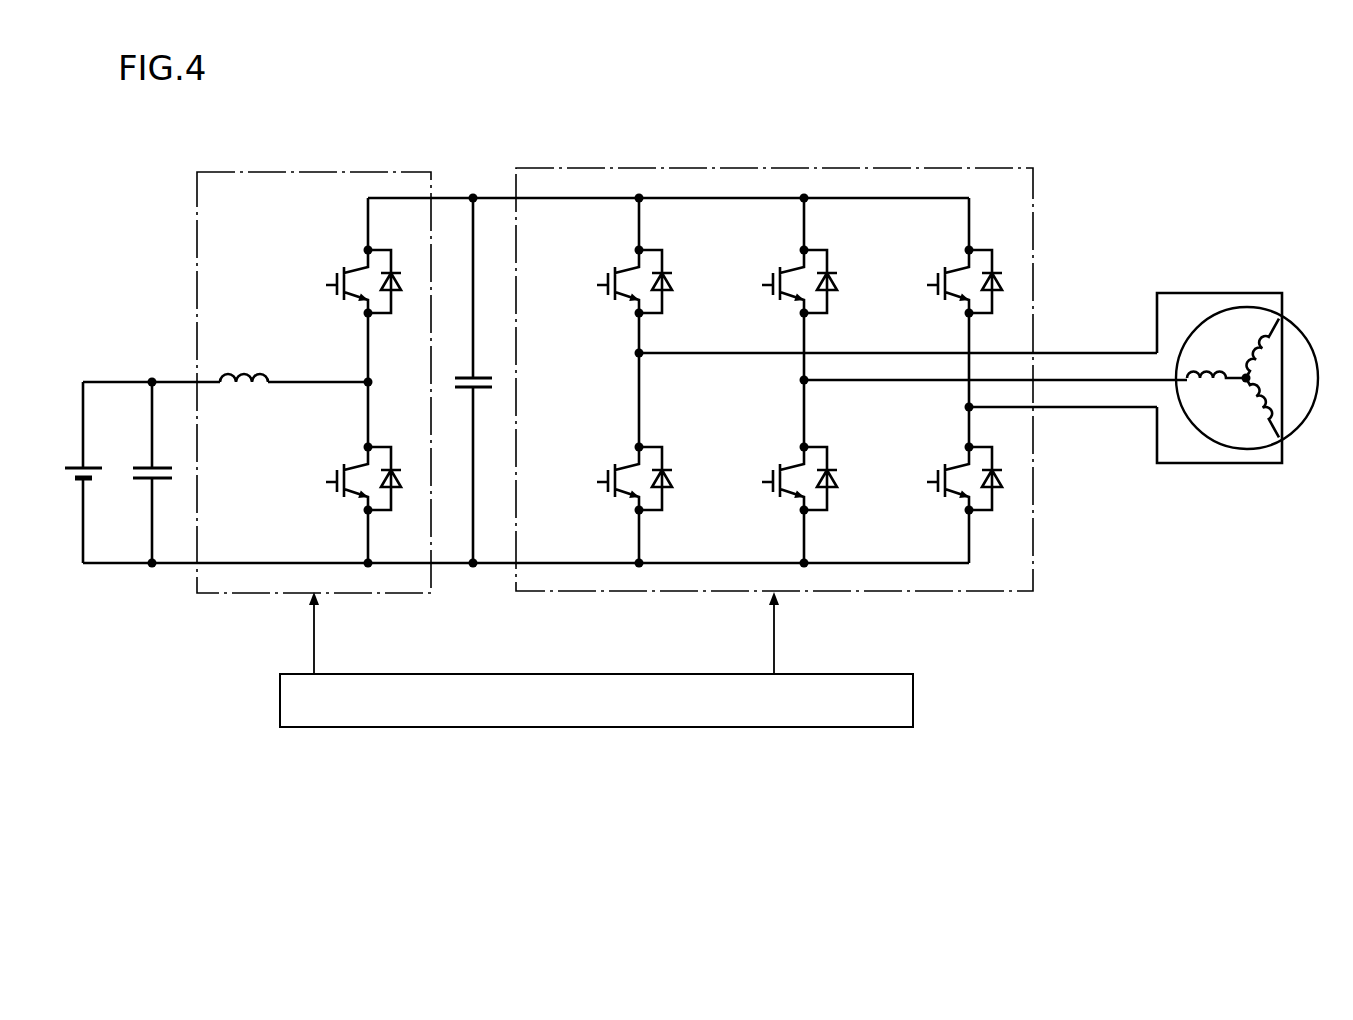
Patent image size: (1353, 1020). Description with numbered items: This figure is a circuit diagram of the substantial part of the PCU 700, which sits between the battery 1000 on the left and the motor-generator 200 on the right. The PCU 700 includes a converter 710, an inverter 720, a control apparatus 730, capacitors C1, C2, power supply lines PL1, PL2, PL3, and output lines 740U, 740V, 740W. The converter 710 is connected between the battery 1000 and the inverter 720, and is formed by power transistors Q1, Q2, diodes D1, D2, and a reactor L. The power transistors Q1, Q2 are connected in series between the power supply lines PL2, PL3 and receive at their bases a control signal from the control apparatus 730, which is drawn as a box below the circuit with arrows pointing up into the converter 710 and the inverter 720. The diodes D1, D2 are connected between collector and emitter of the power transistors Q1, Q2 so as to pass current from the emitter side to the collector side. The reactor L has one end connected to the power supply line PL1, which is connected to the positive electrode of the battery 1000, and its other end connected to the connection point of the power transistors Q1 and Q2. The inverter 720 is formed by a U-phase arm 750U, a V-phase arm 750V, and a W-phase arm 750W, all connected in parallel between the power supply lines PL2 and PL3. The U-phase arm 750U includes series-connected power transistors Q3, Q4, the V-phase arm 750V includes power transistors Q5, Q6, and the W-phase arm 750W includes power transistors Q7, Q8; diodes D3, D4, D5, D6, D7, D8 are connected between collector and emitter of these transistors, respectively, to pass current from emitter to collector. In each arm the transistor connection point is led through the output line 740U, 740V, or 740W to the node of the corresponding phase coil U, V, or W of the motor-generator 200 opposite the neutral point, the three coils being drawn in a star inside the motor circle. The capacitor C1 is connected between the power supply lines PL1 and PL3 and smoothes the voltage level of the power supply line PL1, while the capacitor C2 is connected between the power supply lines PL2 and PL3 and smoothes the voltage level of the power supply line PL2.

The PCU 700 is at (1090, 790).
The converter 710 is at (317, 172).
The inverter 720 is at (980, 167).
The control apparatus 730 is at (880, 728).
The battery 1000 is at (75, 467).
The motor-generator 200 is at (1255, 378).
The power supply line PL1 is at (137, 380).
The power supply line PL2 is at (451, 196).
The power supply line PL3 is at (452, 572).
The reactor L is at (236, 378).
The capacitor C1 is at (165, 467).
The capacitor C2 is at (483, 375).
The power transistor Q1 is at (347, 273).
The power transistor Q2 is at (347, 470).
The power transistor Q3 is at (618, 273).
The power transistor Q4 is at (618, 470).
The power transistor Q5 is at (783, 273).
The power transistor Q6 is at (783, 470).
The power transistor Q7 is at (948, 273).
The power transistor Q8 is at (948, 470).
The diode D1 is at (397, 270).
The diode D2 is at (397, 467).
The diode D3 is at (668, 270).
The diode D4 is at (668, 467).
The diode D5 is at (833, 270).
The diode D6 is at (833, 467).
The diode D7 is at (998, 270).
The diode D8 is at (998, 488).
The output line 740U is at (676, 356).
The output line 740V is at (857, 383).
The output line 740W is at (1005, 410).
The U-phase arm 750U is at (632, 359).
The V-phase arm 750V is at (796, 386).
The W-phase arm 750W is at (962, 413).
The U-phase coil U is at (1268, 346).
The V-phase coil V is at (1216, 362).
The W-phase coil W is at (1257, 406).